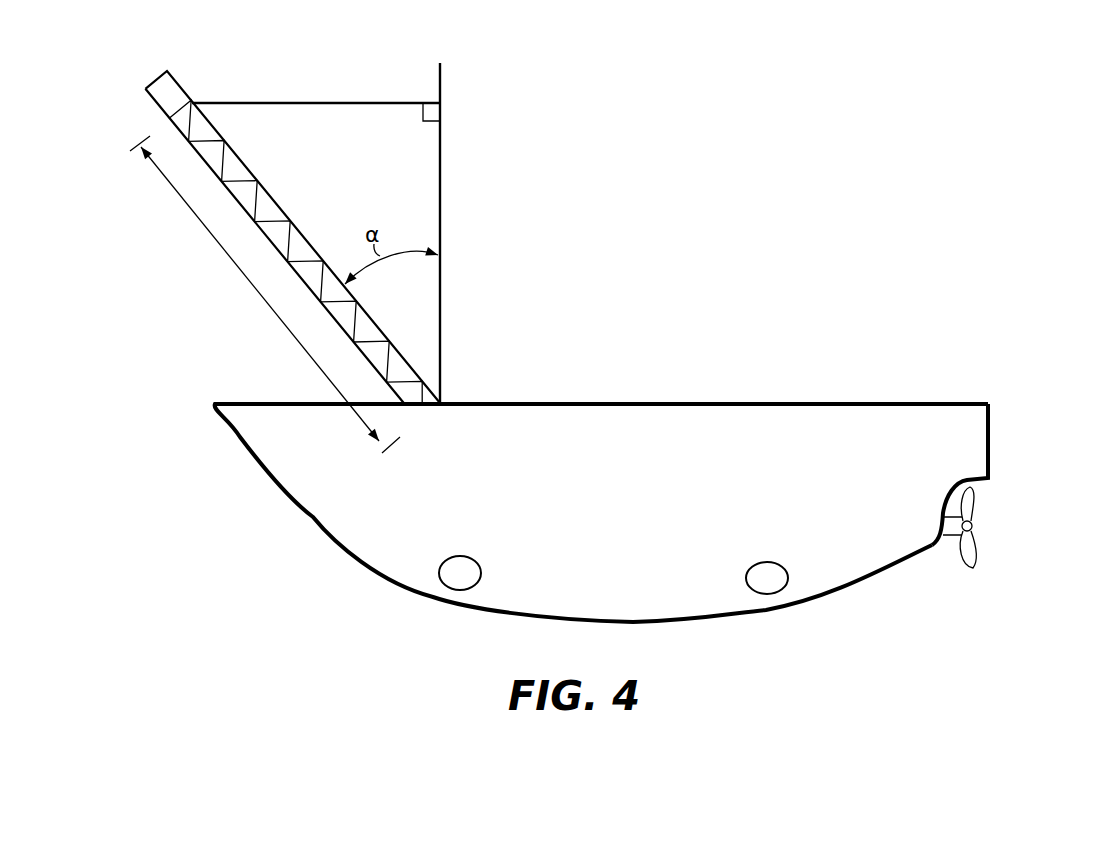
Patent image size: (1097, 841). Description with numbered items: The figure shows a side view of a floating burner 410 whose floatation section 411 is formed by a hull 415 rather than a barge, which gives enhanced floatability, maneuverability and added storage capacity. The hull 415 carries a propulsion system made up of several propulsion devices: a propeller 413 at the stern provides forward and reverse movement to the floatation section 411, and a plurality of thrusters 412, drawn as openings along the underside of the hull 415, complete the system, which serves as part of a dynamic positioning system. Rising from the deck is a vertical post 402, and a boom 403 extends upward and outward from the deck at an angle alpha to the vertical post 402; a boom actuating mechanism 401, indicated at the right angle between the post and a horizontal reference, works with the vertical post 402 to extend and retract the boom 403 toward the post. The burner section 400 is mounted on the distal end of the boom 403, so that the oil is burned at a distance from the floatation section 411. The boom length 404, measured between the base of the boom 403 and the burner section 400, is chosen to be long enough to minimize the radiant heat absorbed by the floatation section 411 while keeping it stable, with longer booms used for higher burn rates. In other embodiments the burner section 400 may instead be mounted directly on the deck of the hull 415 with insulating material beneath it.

The burner section 400 is at (167, 87).
The boom actuating mechanism 401 is at (424, 116).
The vertical post 402 is at (443, 215).
The boom 403 is at (265, 196).
The boom length 404 is at (242, 273).
The floating burner 410 is at (645, 411).
The floatation section 411 is at (1012, 440).
The thrusters 412 is at (457, 580).
The propeller 413 is at (978, 518).
The hull 415 is at (330, 506).